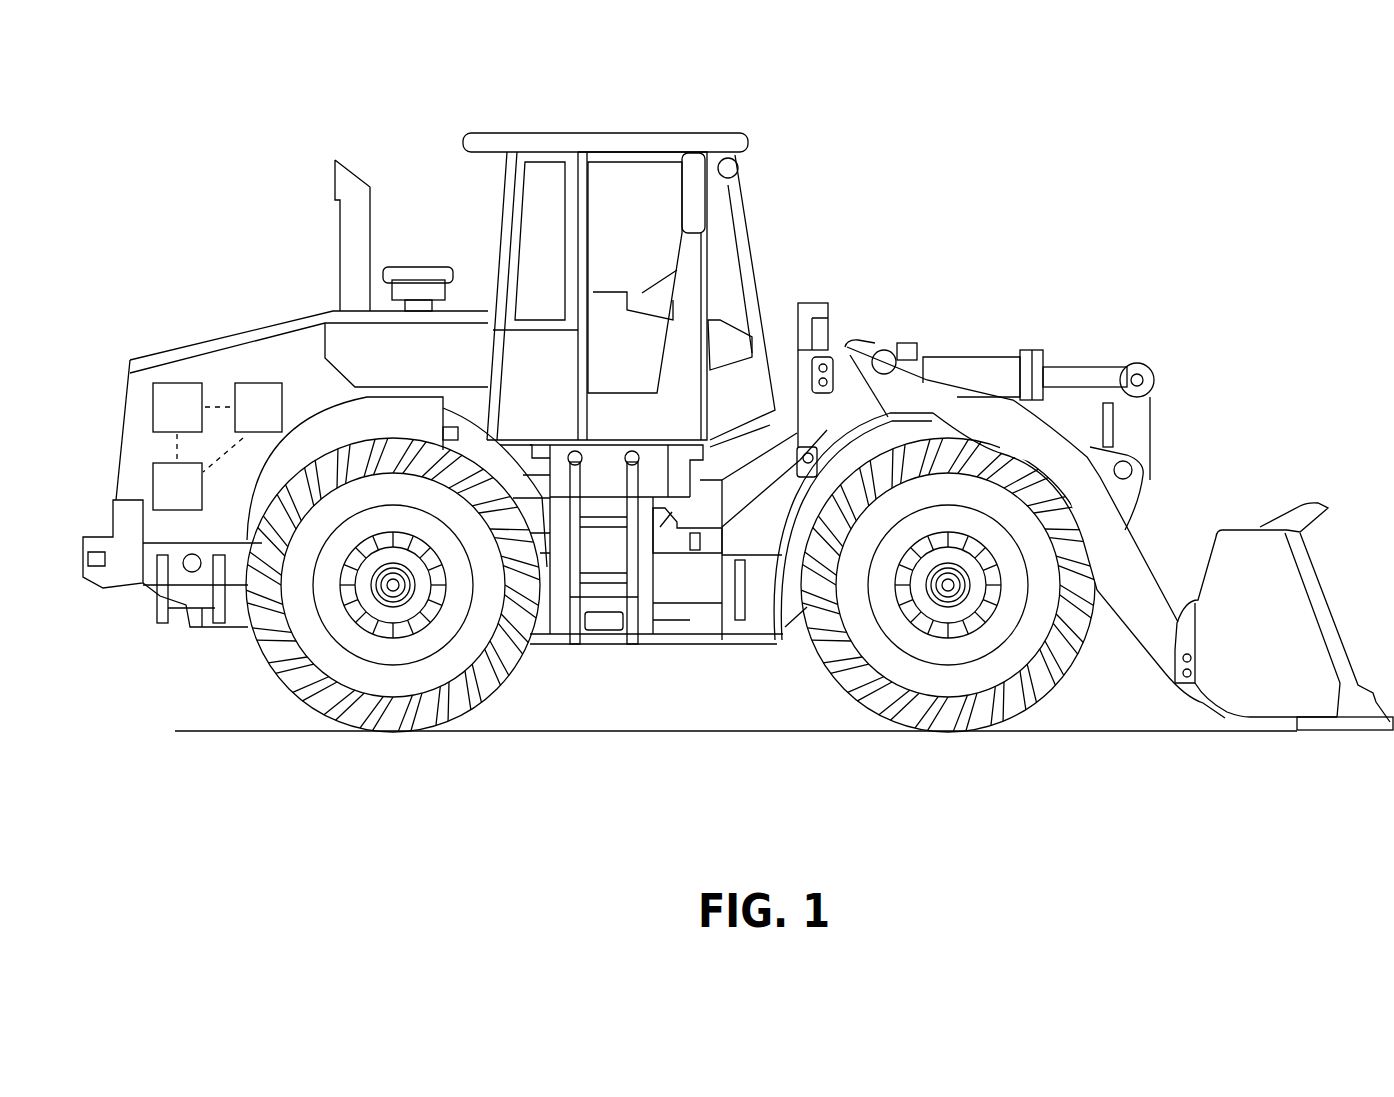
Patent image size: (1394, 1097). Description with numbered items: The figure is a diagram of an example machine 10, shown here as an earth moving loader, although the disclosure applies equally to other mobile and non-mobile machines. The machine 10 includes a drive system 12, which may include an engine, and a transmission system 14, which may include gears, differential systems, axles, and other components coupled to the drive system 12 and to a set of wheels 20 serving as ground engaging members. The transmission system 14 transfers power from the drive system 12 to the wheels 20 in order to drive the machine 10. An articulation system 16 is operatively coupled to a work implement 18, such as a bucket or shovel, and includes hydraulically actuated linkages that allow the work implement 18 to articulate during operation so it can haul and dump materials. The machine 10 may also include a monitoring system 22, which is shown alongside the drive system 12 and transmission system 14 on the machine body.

The machine 10 is at (832, 185).
The drive system 12 is at (193, 422).
The transmission system 14 is at (242, 427).
The articulation system 16 is at (677, 555).
The work implement 18 is at (1350, 508).
The wheels 20 is at (462, 718).
The monitoring system 22 is at (177, 486).